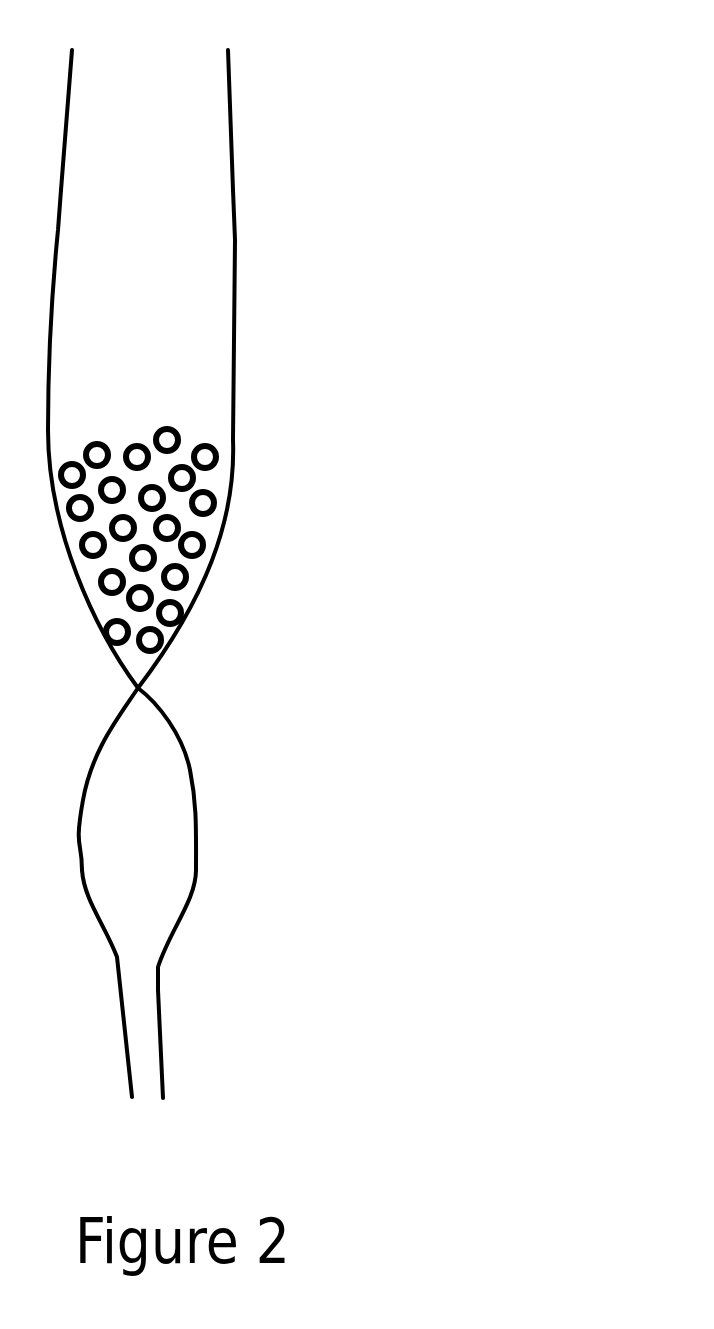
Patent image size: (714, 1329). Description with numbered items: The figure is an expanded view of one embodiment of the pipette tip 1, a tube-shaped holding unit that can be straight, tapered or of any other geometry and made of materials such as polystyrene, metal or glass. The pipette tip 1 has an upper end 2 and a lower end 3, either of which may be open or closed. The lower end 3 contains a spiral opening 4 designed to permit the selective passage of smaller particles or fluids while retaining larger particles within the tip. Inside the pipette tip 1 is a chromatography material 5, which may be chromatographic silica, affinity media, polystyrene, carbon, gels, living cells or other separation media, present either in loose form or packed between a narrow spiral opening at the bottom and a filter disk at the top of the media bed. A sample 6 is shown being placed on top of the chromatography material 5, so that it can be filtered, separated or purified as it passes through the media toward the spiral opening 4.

The pipette tip 1 is at (328, 576).
The upper end 2 is at (167, 40).
The lower end 3 is at (157, 1112).
The spiral opening 4 is at (162, 708).
The chromatography material 5 is at (180, 537).
The sample 6 is at (178, 320).